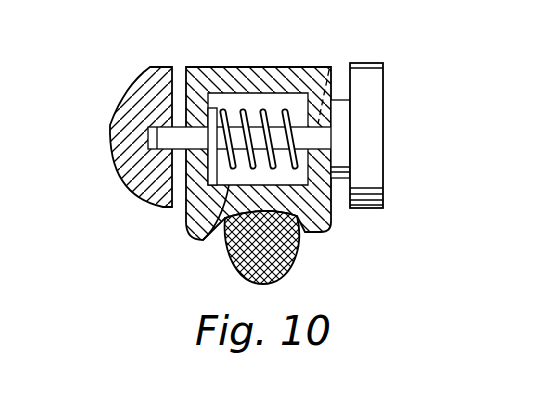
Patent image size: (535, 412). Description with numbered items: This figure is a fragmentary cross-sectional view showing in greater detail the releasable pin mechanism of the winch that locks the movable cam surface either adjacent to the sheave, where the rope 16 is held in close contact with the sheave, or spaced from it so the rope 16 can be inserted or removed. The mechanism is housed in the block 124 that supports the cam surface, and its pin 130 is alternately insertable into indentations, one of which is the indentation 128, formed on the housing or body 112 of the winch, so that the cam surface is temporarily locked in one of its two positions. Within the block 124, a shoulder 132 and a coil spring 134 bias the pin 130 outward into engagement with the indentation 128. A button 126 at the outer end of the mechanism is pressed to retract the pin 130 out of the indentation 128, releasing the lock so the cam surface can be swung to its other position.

The rope 16 is at (272, 268).
The body 112 is at (147, 81).
The block 124 is at (203, 72).
The button 126 is at (377, 130).
The indentation 128 is at (150, 140).
The pin 130 is at (335, 64).
The shoulder 132 is at (216, 110).
The coil spring 134 is at (201, 233).